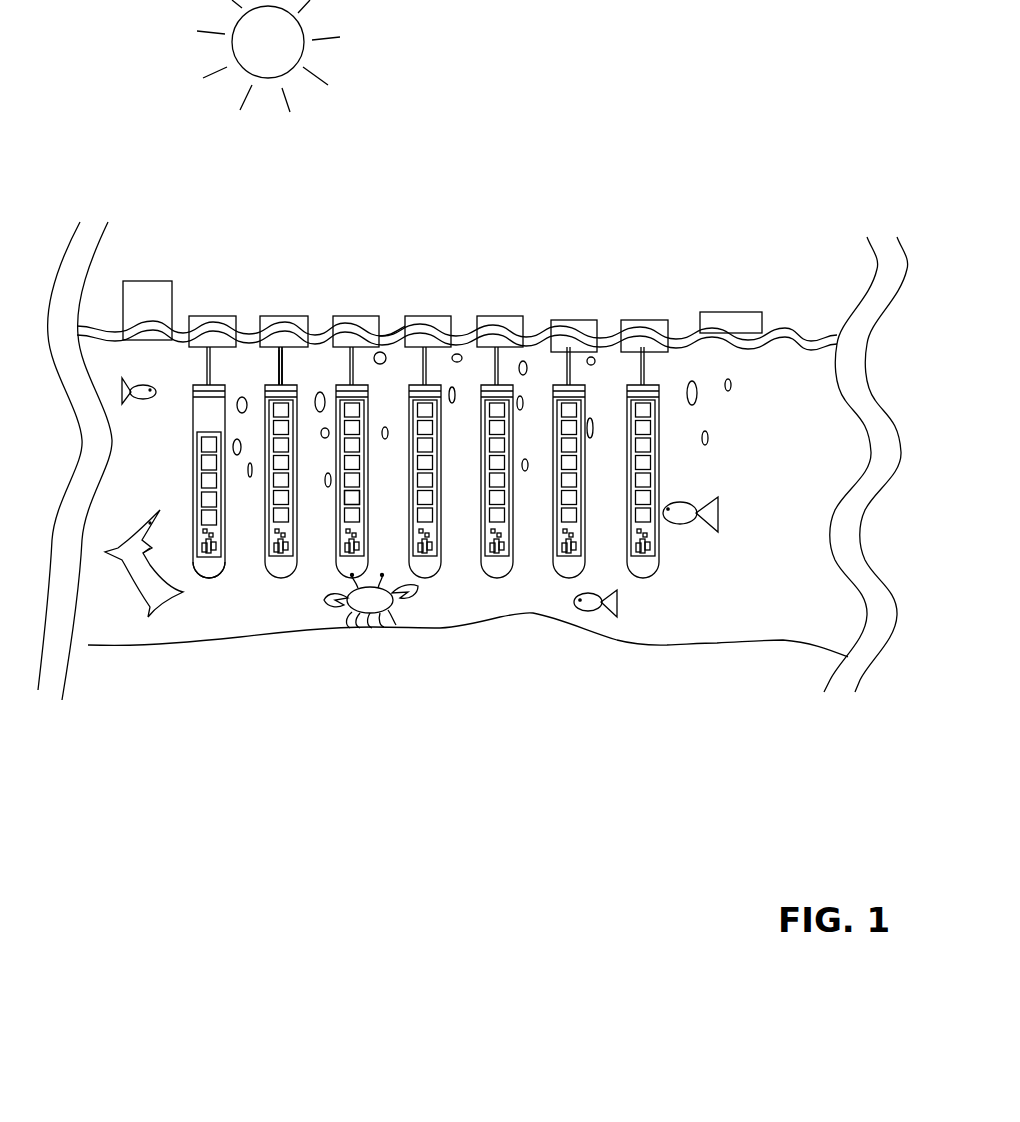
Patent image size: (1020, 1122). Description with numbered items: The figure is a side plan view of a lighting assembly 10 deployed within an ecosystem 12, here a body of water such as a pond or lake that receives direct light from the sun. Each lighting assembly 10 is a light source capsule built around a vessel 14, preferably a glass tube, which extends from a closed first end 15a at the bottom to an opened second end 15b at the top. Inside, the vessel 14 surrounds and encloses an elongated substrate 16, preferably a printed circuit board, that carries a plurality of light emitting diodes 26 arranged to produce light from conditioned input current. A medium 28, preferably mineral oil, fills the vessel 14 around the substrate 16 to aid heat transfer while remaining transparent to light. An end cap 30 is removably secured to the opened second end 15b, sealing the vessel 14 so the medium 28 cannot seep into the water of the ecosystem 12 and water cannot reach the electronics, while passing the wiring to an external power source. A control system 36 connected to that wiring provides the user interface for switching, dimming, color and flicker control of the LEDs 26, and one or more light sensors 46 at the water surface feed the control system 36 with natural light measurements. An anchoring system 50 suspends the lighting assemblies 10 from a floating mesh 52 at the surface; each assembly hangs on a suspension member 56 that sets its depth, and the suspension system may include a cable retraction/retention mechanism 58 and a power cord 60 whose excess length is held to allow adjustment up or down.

The lighting assembly 10 is at (457, 280).
The ecosystem 12 is at (784, 113).
The vessel 14 is at (264, 474).
The closed first end 15a is at (215, 565).
The opened second end 15b is at (196, 386).
The substrate 16 is at (212, 490).
The light emitting diodes 26 is at (210, 517).
The medium 28 is at (267, 437).
The end cap 30 is at (224, 384).
The control system 36 is at (172, 292).
The light sensors 46 is at (729, 310).
The anchoring system 50 is at (492, 288).
The floating mesh 52 is at (391, 328).
The suspension member 56 is at (280, 367).
The cable retraction/retention mechanism 58 is at (790, 339).
The power cord 60 is at (773, 327).